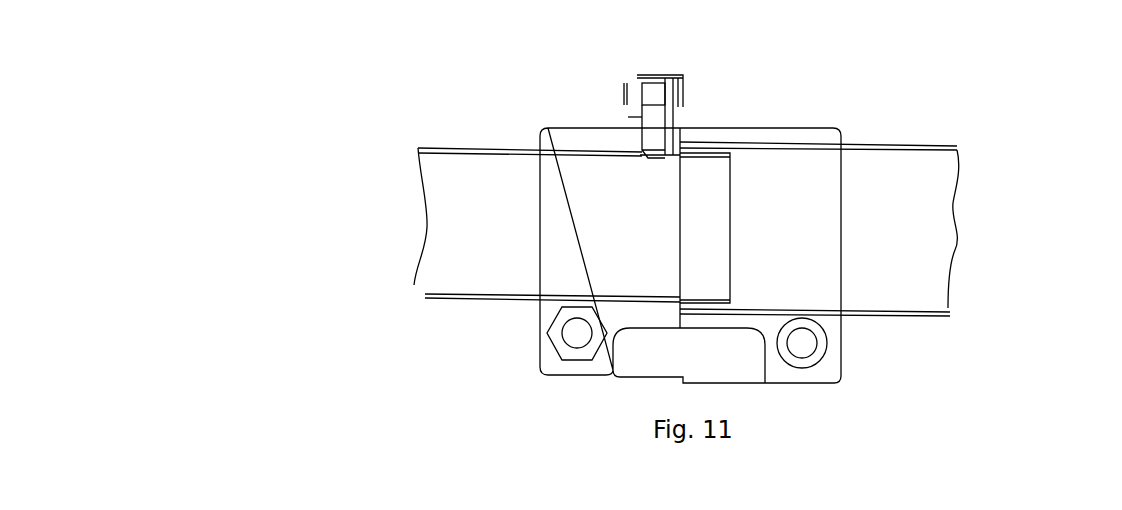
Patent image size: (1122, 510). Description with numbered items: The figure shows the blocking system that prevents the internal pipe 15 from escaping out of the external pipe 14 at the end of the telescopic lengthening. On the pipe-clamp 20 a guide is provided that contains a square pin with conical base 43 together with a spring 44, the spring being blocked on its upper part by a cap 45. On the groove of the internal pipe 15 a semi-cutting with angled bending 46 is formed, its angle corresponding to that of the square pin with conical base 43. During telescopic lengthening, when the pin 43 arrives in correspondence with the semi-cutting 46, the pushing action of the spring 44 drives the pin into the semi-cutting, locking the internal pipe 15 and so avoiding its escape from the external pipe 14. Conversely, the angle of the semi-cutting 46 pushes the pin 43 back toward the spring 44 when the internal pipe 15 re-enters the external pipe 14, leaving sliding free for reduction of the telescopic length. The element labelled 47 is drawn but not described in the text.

The external pipe 14 is at (950, 320).
The internal pipe 15 is at (425, 293).
The pipe-clamp 20 is at (841, 387).
The square pin with conical base 43 is at (662, 128).
The spring 44 is at (653, 93).
The cap 45 is at (620, 70).
The semi-cutting with angled bending 46 is at (652, 165).
The hinge pivot 47 is at (628, 117).